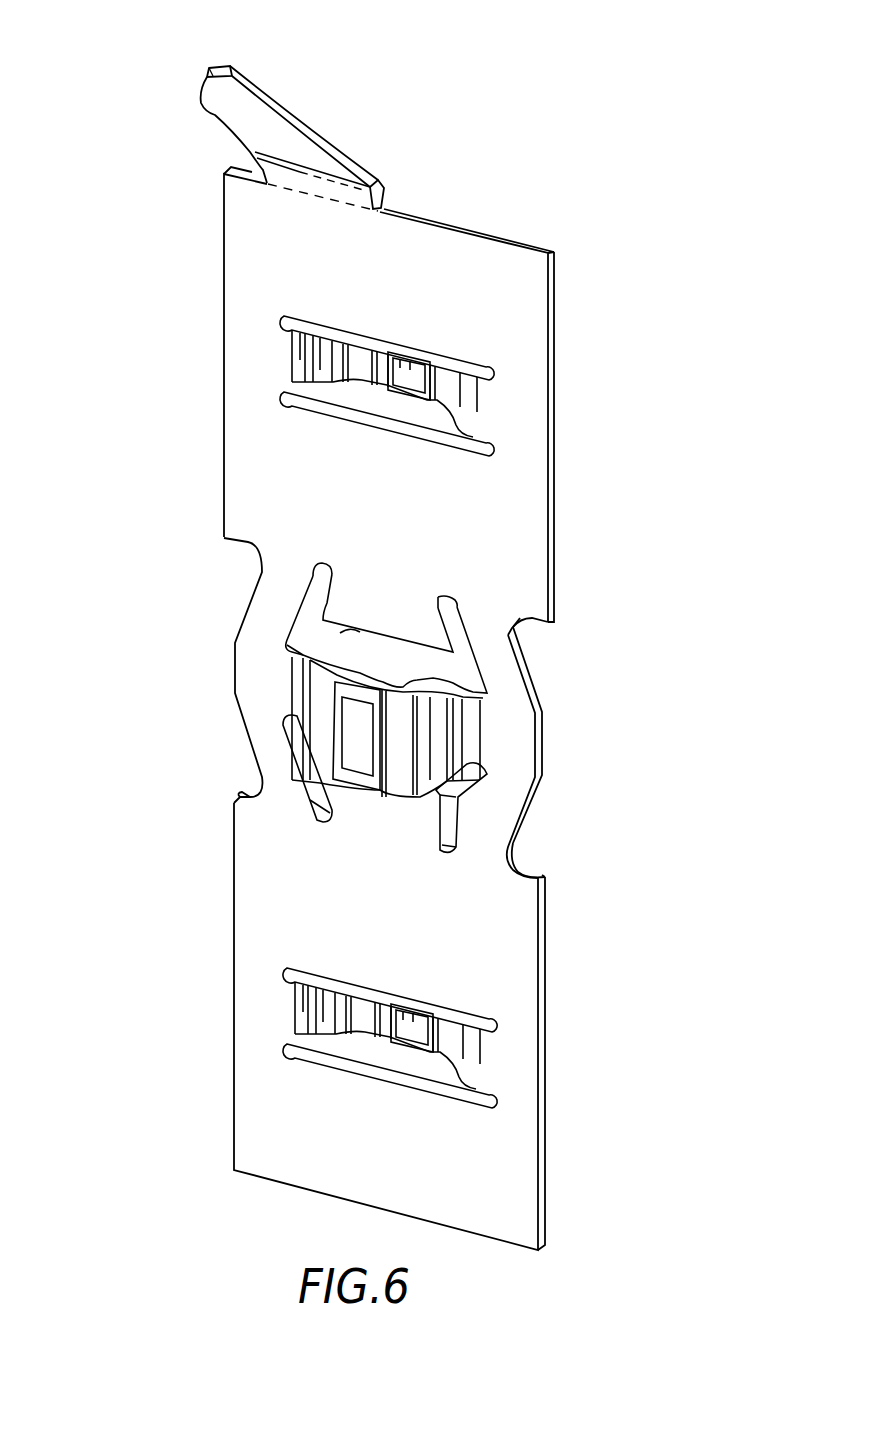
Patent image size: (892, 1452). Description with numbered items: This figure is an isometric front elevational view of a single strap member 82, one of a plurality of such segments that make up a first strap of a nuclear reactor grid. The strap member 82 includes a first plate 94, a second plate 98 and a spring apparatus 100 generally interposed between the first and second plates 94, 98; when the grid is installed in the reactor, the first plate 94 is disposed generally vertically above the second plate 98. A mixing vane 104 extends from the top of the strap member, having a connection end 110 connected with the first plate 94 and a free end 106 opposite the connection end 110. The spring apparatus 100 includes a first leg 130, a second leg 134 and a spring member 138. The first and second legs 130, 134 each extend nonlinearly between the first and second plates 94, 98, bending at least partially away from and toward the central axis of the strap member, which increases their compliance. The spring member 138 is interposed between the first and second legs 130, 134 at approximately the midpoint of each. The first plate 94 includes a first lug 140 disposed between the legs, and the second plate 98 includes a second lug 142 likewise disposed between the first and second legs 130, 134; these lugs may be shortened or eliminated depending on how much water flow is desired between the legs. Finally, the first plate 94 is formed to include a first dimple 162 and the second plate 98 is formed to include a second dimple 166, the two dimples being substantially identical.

The strap member 82 is at (466, 214).
The first plate 94 is at (557, 342).
The second plate 98 is at (557, 963).
The spring apparatus 100 is at (556, 742).
The mixing vane 104 is at (216, 124).
The free end 106 is at (219, 61).
The connection end 110 is at (389, 212).
The first leg 130 is at (530, 668).
The second leg 134 is at (247, 737).
The spring member 138 is at (386, 804).
The first lug 140 is at (360, 632).
The second lug 142 is at (487, 811).
The first dimple 162 is at (430, 404).
The second dimple 166 is at (435, 1062).